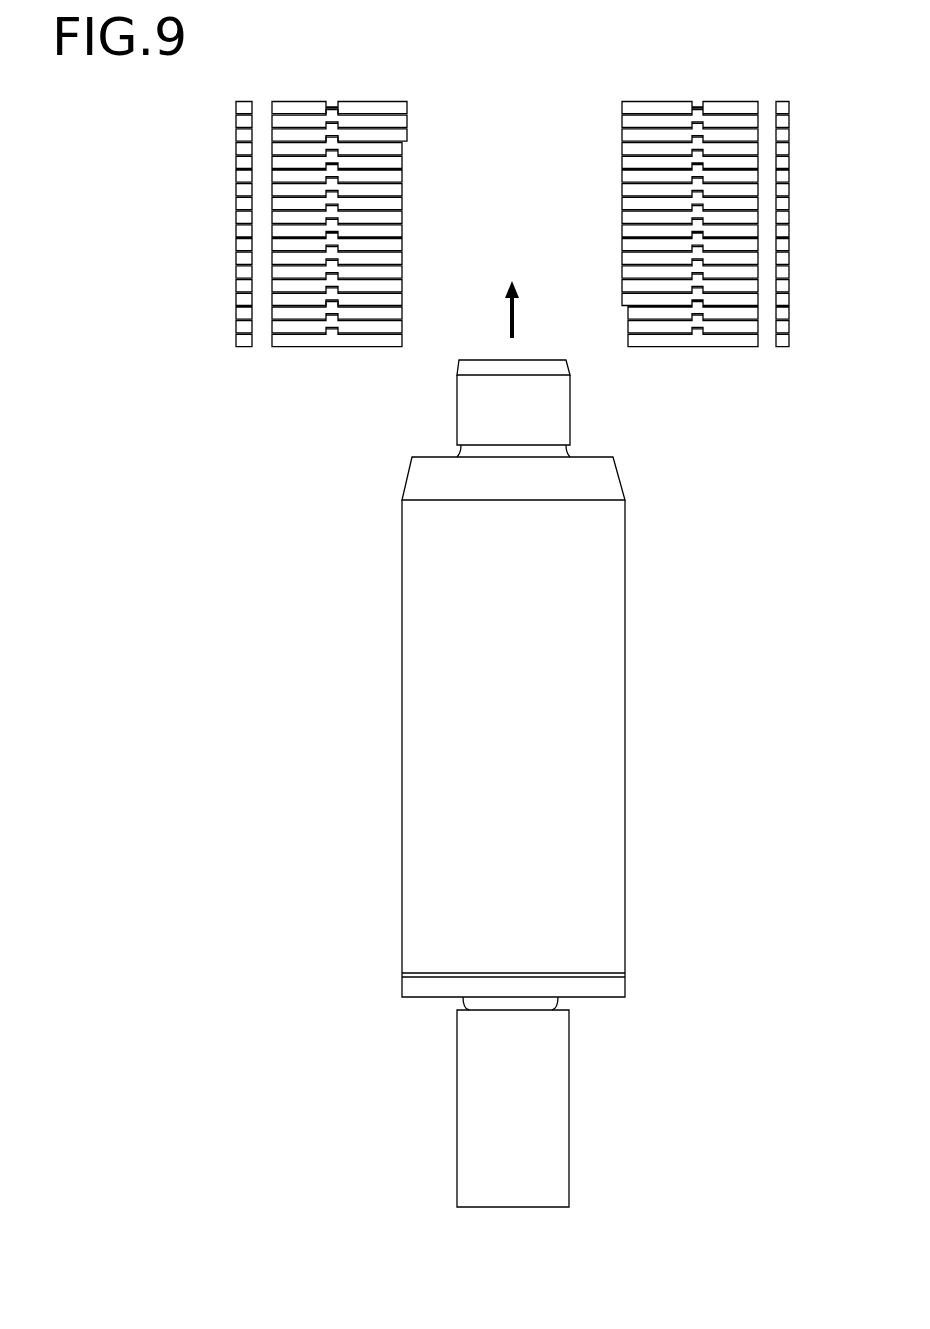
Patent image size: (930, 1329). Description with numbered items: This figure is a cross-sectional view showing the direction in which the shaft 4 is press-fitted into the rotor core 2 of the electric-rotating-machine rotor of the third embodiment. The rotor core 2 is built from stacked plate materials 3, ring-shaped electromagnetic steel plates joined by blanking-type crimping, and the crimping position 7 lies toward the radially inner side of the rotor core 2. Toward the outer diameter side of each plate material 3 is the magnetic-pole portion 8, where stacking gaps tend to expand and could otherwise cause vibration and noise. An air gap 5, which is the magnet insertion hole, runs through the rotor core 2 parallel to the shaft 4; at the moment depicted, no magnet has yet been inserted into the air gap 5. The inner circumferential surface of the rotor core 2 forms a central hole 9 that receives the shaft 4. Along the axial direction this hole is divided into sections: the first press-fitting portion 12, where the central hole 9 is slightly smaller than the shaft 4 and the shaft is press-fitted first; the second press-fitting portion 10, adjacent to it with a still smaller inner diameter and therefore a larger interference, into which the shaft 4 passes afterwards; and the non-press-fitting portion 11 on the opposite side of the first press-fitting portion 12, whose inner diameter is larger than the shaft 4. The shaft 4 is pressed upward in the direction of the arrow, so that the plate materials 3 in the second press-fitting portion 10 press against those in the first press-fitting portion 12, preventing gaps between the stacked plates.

The rotor core 2 is at (727, 85).
The plate material 3 is at (389, 182).
The shaft 4 is at (401, 527).
The air gap 5 is at (262, 103).
The crimping position 7 is at (328, 100).
The magnetic-pole portion 8 is at (243, 100).
The central hole 9 is at (565, 125).
The second press-fitting portion 10 is at (389, 78).
The non-press-fitting portion 11 is at (423, 310).
The first press-fitting portion 12 is at (418, 147).